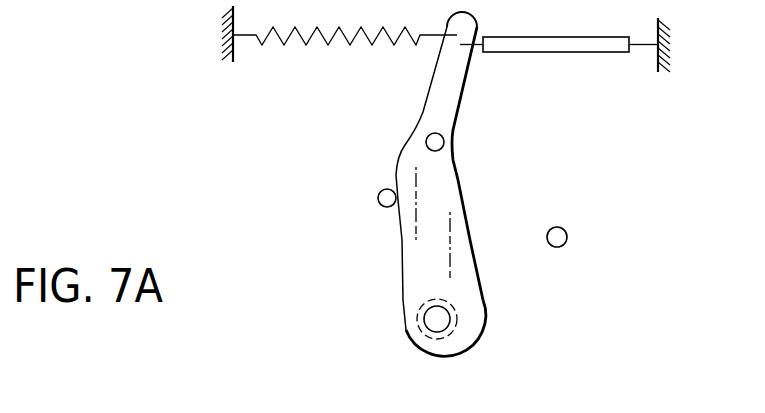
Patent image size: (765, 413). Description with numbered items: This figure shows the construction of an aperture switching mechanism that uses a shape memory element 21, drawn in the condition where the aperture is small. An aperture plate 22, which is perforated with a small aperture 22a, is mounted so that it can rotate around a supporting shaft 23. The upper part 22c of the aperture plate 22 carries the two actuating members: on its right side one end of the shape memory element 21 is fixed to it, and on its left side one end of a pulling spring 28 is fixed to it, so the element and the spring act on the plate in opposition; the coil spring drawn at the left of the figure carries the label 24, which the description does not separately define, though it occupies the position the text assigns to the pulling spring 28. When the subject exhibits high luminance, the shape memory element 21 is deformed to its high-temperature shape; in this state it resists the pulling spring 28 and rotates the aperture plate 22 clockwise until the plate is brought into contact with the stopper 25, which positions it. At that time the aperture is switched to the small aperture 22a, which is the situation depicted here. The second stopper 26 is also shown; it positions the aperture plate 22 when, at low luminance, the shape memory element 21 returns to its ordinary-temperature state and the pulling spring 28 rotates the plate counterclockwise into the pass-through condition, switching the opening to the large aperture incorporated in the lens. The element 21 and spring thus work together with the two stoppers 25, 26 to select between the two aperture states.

The shape memory element 21 is at (598, 53).
The aperture plate 22 is at (466, 194).
The small aperture 22a is at (440, 319).
The upper part of the aperture plate 22c is at (463, 82).
The supporting shaft 23 is at (444, 142).
The spring 24 is at (298, 38).
The stopper 25 is at (381, 191).
The stopper 26 is at (567, 236).
The pulling spring 28 is at (456, 328).